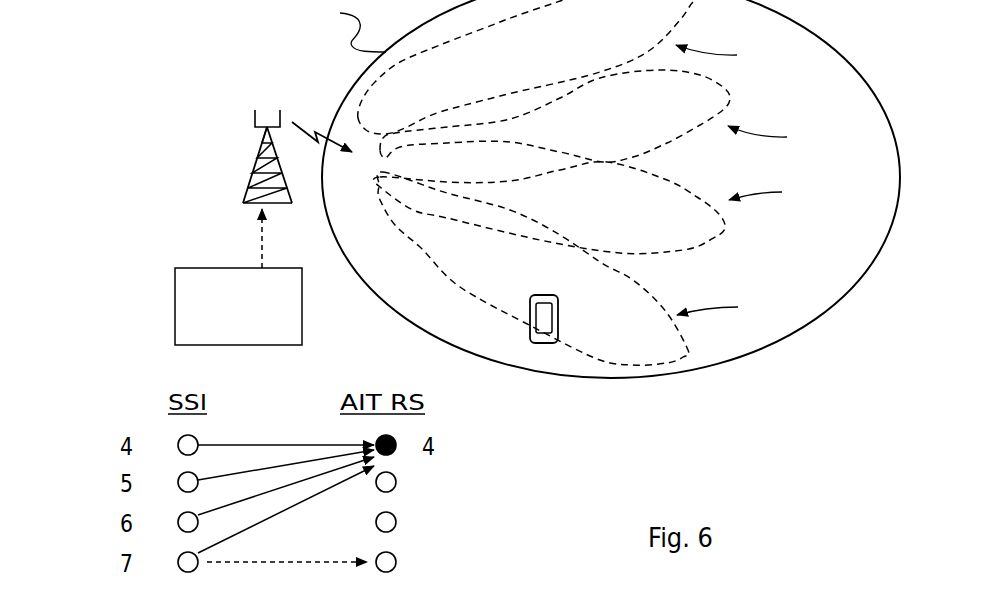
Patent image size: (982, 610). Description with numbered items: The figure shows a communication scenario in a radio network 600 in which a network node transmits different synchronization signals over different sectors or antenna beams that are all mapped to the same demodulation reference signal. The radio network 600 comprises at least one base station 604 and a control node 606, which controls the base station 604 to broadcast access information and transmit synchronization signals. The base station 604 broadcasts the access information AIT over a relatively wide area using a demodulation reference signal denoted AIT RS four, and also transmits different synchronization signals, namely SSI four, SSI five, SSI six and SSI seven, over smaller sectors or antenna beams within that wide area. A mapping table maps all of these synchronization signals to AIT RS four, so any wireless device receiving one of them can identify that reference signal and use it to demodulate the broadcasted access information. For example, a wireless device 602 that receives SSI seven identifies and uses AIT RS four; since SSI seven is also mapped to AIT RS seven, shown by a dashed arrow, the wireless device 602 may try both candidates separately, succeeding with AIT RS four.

The radio network 600 is at (126, 106).
The wireless device 602 is at (558, 312).
The base station 604 is at (250, 180).
The control node 606 is at (176, 306).